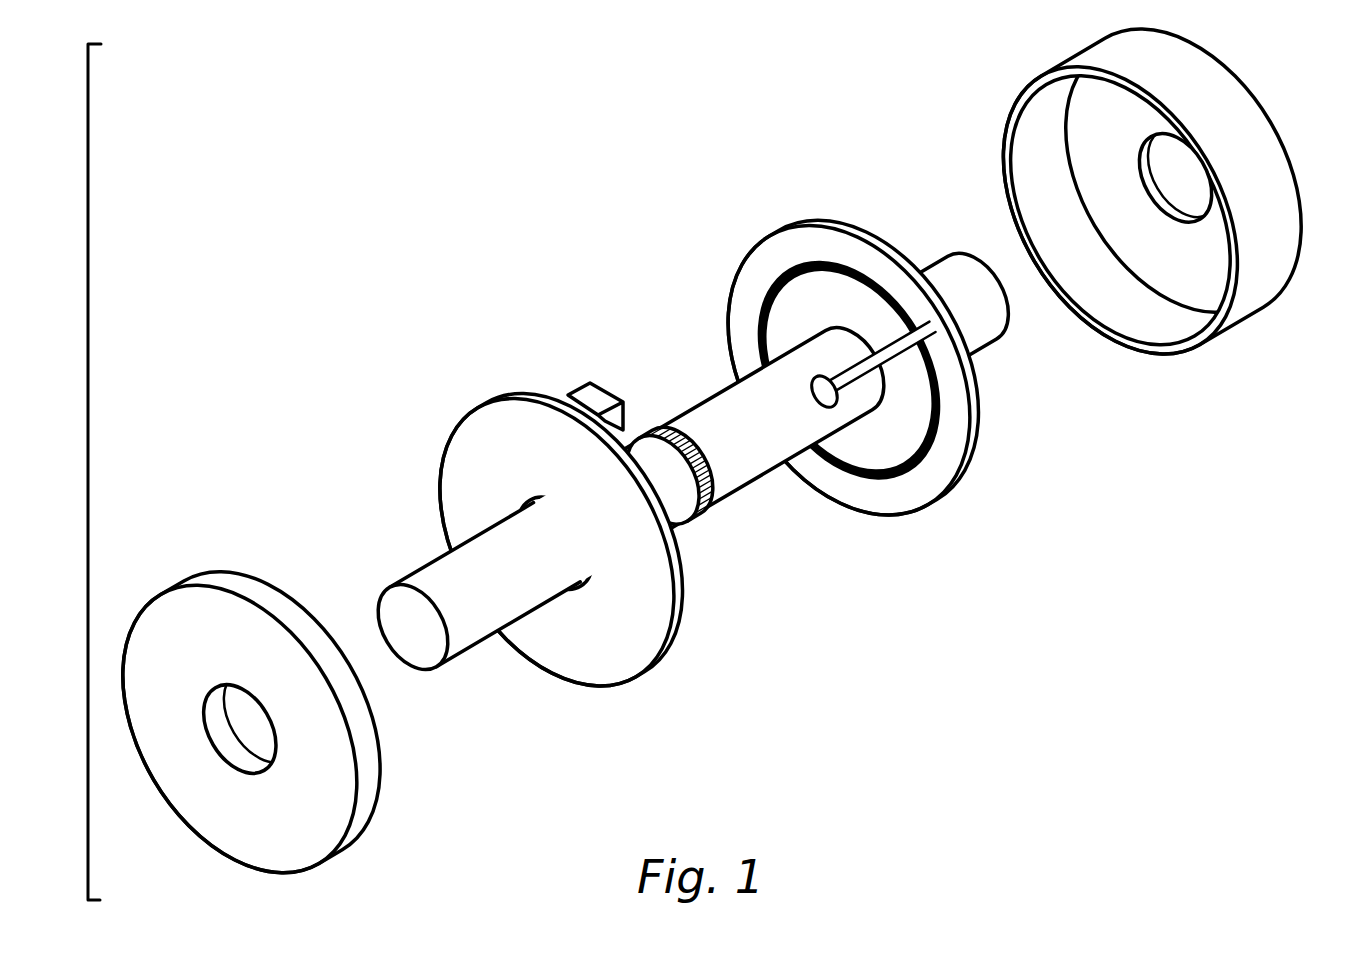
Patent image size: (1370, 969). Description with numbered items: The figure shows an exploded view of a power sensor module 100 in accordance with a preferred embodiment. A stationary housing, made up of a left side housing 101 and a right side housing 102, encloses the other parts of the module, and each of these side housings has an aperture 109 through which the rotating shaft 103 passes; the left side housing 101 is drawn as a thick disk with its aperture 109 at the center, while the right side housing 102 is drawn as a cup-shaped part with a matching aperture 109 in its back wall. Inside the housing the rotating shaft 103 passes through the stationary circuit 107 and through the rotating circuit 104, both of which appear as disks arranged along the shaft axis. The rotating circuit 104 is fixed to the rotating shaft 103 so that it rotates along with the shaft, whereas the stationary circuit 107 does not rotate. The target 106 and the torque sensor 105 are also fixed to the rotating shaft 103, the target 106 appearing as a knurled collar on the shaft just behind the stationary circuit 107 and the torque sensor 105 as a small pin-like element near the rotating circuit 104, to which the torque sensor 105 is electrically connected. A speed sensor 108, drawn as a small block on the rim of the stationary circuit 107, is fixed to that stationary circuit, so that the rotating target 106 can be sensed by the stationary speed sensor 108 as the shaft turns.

The power sensor module 100 is at (312, 200).
The left side housing 101 is at (228, 579).
The right side housing 102 is at (1250, 298).
The rotating shaft 103 is at (988, 335).
The rotating circuit 104 is at (930, 482).
The torque sensor 105 is at (817, 395).
The target 106 is at (708, 505).
The stationary circuit 107 is at (627, 650).
The speed sensor 108 is at (590, 398).
The aperture 109 is at (225, 738).